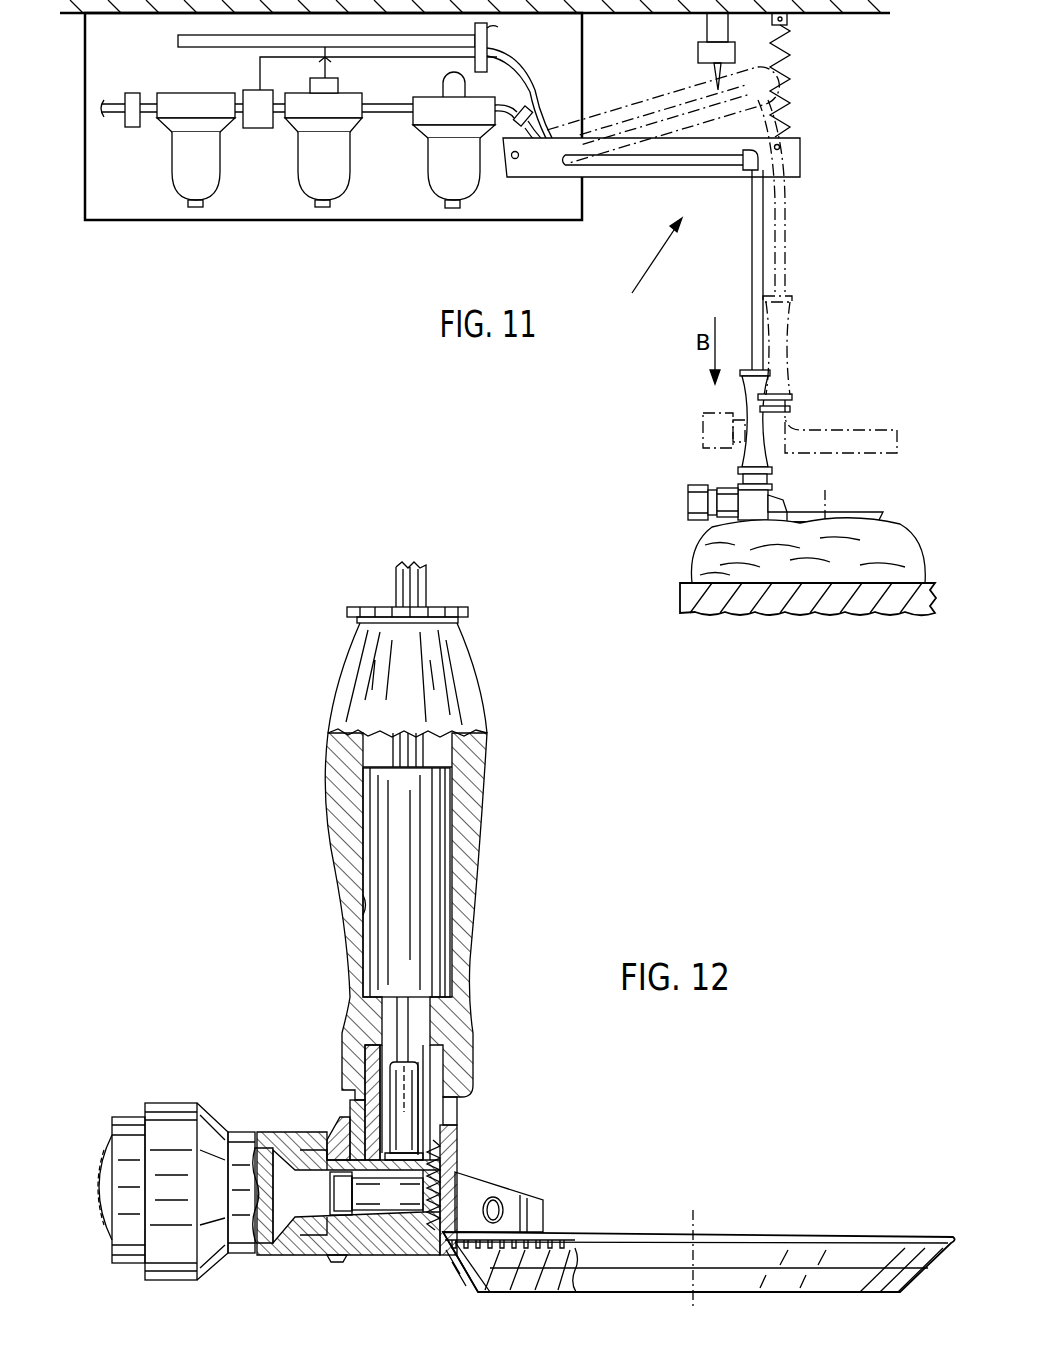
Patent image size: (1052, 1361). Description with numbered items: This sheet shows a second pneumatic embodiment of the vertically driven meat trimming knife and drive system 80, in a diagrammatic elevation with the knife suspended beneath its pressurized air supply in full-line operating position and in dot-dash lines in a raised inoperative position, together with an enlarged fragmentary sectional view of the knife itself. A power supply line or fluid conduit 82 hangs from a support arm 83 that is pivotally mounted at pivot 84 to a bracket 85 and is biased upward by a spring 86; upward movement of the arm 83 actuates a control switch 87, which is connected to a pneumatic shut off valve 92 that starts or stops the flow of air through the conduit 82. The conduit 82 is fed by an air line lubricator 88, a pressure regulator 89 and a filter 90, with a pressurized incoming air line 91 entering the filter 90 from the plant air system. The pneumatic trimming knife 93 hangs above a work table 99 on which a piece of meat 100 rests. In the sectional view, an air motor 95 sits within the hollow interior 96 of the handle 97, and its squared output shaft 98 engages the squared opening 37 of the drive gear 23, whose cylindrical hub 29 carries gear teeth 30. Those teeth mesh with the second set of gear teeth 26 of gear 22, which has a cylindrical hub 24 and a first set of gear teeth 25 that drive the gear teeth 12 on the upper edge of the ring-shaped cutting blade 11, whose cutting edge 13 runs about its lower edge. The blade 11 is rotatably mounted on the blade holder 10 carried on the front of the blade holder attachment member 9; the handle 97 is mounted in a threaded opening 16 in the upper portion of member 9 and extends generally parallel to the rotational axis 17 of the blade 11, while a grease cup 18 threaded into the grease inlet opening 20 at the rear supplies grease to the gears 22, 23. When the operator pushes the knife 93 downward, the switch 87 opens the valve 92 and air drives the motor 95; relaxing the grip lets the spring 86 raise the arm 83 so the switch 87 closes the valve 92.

In FIG. 11, the blade holder attachment member 9 is at (750, 505).
In FIG. 12, the blade holder attachment member 9 is at (365, 1243).
In FIG. 12, the blade holder 10 is at (520, 1207).
In FIG. 11, the cutting blade 11 is at (865, 520).
In FIG. 12, the cutting blade 11 is at (553, 1292).
In FIG. 12, the gear teeth 12 is at (575, 1258).
In FIG. 11, the cutting edge 13 is at (862, 445).
In FIG. 12, the cutting edge 13 is at (476, 1292).
In FIG. 12, the threaded opening 16 is at (350, 1120).
In FIG. 11, the rotational axis 17 is at (830, 507).
In FIG. 12, the rotational axis 17 is at (697, 1250).
In FIG. 11, the grease cup 18 is at (700, 503).
In FIG. 12, the grease cup 18 is at (172, 1157).
In FIG. 12, the grease inlet opening 20 is at (270, 1225).
In FIG. 12, the gear 22 is at (396, 1212).
In FIG. 12, the gear 23 is at (404, 1125).
In FIG. 12, the cylindrical hub 24 is at (360, 1188).
In FIG. 12, the first set of gear teeth 25 is at (450, 1222).
In FIG. 12, the second set of gear teeth 26 is at (448, 1178).
In FIG. 12, the cylindrical hub 29 is at (435, 1082).
In FIG. 12, the gear teeth 30 is at (405, 1170).
In FIG. 12, the squared opening 37 is at (358, 1078).
In FIG. 11, the trimming knife and drive system 80 is at (647, 269).
In FIG. 11, the fluid conduit 82 is at (780, 216).
In FIG. 12, the fluid conduit 82 is at (418, 580).
In FIG. 11, the support arm 83 is at (653, 97).
In FIG. 11, the pivot 84 is at (518, 160).
In FIG. 11, the bracket 85 is at (383, 188).
In FIG. 11, the spring 86 is at (790, 122).
In FIG. 11, the control switch 87 is at (698, 52).
In FIG. 11, the air line lubricator 88 is at (465, 180).
In FIG. 11, the pressure regulator 89 is at (308, 162).
In FIG. 11, the filter 90 is at (182, 178).
In FIG. 11, the pressurized incoming air line 91 is at (112, 104).
In FIG. 11, the pneumatic shut off valve 92 is at (133, 128).
In FIG. 11, the pneumatic trimming knife 93 is at (790, 338).
In FIG. 12, the pneumatic trimming knife 93 is at (335, 820).
In FIG. 12, the air motor 95 is at (420, 858).
In FIG. 12, the hollow interior 96 is at (363, 905).
In FIG. 12, the handle 97 is at (420, 680).
In FIG. 12, the squared output shaft 98 is at (408, 1013).
In FIG. 11, the work table 99 is at (790, 597).
In FIG. 11, the piece of meat 100 is at (700, 565).